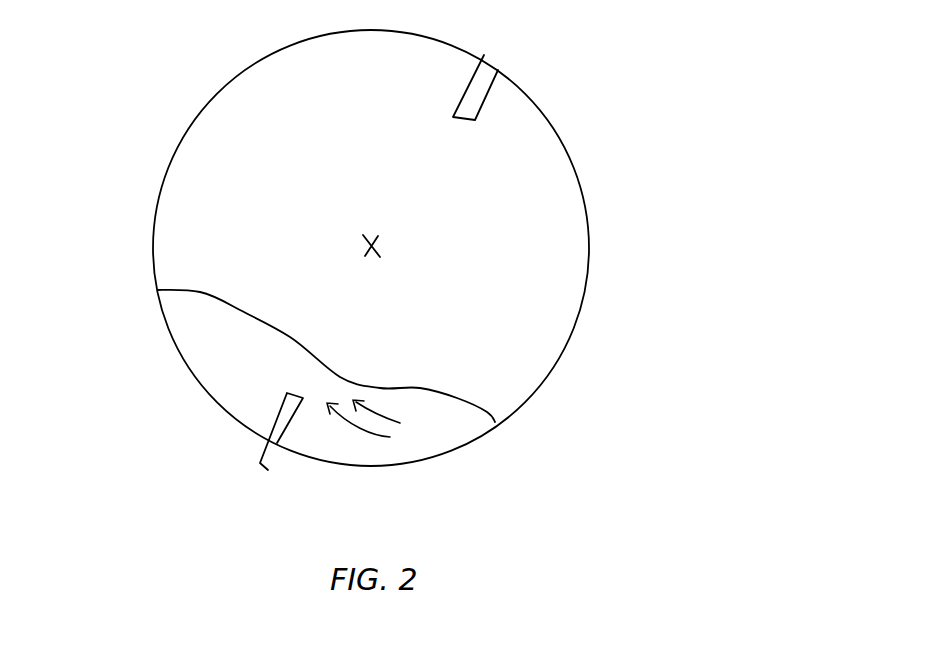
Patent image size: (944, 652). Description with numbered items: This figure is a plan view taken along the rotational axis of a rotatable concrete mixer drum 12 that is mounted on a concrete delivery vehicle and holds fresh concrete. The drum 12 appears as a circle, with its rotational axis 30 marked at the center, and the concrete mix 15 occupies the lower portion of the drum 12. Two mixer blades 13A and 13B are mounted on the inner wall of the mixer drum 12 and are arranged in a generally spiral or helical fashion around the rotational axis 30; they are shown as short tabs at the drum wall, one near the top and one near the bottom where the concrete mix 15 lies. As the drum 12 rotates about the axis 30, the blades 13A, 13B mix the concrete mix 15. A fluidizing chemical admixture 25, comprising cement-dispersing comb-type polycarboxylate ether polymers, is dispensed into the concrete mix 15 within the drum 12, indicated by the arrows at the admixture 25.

The rotatable concrete mixer drum 12 is at (563, 150).
The mixer blade 13A is at (493, 70).
The mixer blade 13B is at (296, 450).
The concrete mix 15 is at (197, 328).
The chemical admixture 25 is at (403, 435).
The rotational axis 30 is at (397, 243).